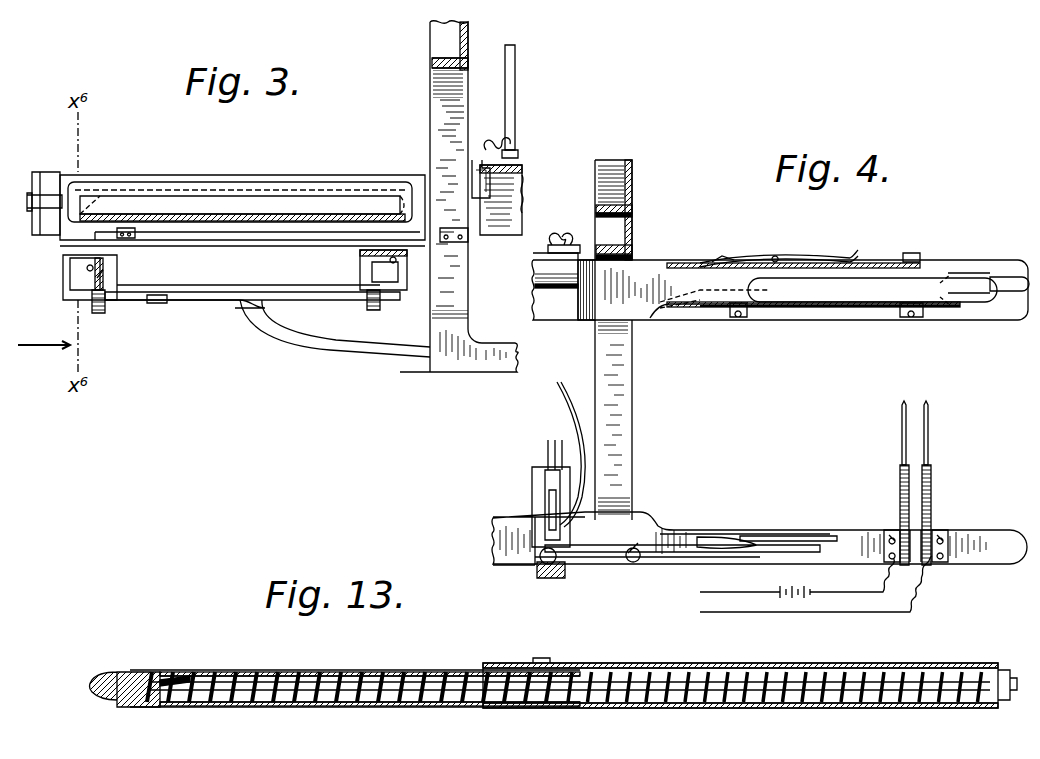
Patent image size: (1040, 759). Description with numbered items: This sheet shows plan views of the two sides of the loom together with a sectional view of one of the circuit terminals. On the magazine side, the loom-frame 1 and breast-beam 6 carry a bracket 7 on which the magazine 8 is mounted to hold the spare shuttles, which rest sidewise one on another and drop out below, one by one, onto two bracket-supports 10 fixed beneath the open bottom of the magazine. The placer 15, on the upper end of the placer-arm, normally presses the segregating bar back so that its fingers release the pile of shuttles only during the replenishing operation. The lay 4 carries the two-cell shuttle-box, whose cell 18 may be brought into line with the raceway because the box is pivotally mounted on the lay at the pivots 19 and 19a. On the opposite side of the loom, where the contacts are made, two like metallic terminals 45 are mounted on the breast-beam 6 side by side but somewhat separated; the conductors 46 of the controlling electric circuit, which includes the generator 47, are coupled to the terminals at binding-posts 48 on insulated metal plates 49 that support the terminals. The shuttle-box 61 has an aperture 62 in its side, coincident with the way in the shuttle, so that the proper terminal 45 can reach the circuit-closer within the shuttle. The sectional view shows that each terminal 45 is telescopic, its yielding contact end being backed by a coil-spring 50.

In FIG. 3, the loom-frame 1 is at (432, 90).
In FIG. 4, the loom-frame 1 is at (628, 167).
In FIG. 3, the lay 4 is at (330, 178).
In FIG. 4, the lay 4 is at (660, 262).
In FIG. 3, the breast-beam 6 is at (493, 368).
In FIG. 4, the breast-beam 6 is at (505, 518).
In FIG. 3, the bracket 7 is at (348, 350).
In FIG. 3, the magazine 8 is at (81, 284).
In FIG. 3, the bracket-supports 10 is at (105, 275).
In FIG. 3, the placer 15 is at (252, 286).
In FIG. 3, the shuttle-box cell 18 is at (206, 186).
In FIG. 3, the pivot 19 is at (47, 178).
In FIG. 3, the pivot 19a is at (432, 203).
In FIG. 4, the metallic terminals 45 is at (930, 490).
In FIG. 13, the metallic terminals 45 is at (748, 672).
In FIG. 4, the conductors 46 is at (855, 586).
In FIG. 4, the generator 47 is at (796, 580).
In FIG. 4, the binding-posts 48 is at (895, 557).
In FIG. 4, the insulated metal plates 49 is at (891, 532).
In FIG. 13, the coil-springs 50 is at (748, 692).
In FIG. 4, the shuttle-box 61 is at (880, 265).
In FIG. 4, the aperture 62 is at (893, 310).